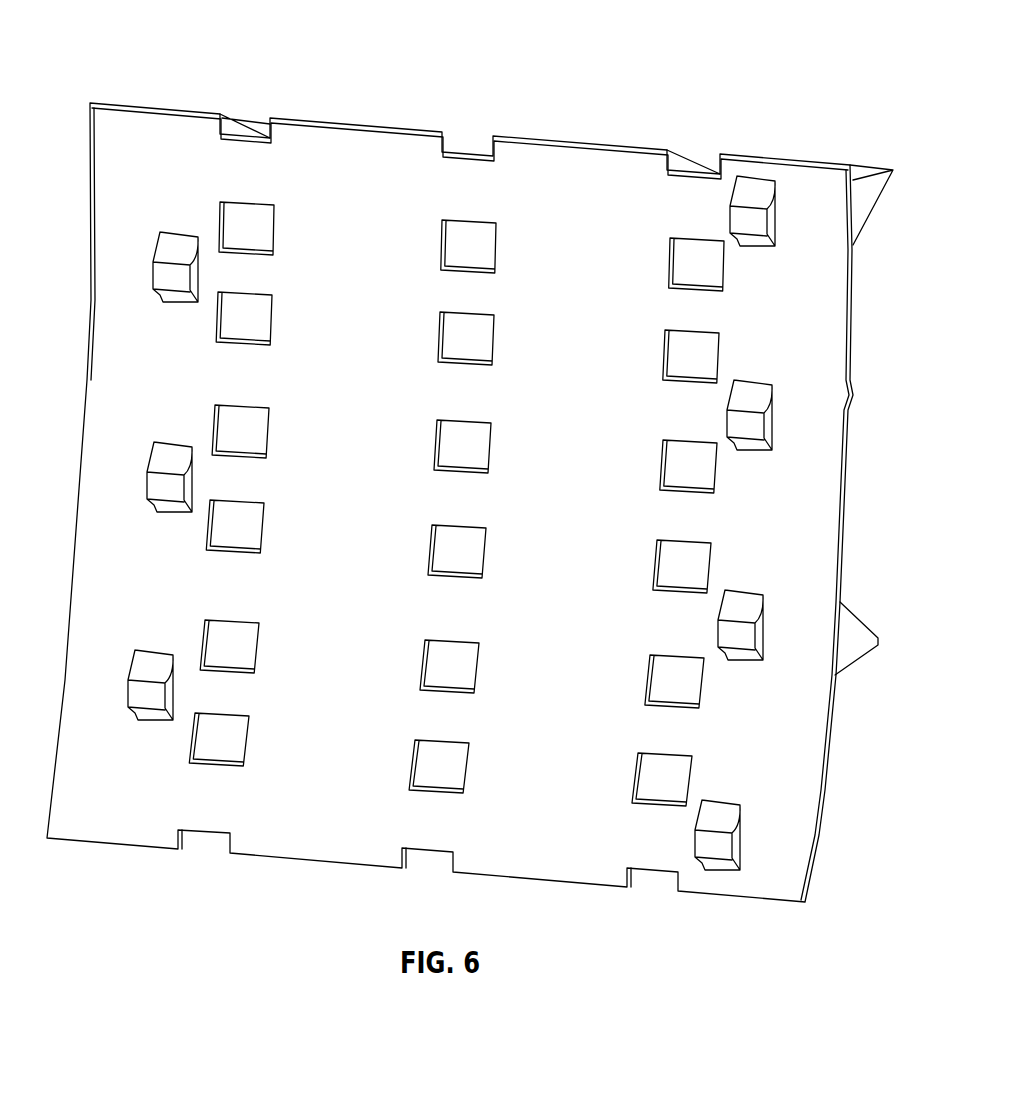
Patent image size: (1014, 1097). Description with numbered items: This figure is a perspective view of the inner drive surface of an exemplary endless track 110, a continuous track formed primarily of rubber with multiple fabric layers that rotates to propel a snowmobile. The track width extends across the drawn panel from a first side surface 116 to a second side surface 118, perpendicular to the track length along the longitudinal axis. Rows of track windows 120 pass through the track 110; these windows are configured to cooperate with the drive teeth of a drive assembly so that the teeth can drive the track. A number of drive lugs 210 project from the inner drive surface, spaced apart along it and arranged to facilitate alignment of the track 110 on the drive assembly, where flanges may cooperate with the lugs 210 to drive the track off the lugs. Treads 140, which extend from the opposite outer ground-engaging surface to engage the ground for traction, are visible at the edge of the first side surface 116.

The endless track 110 is at (152, 45).
The first side surface 116 is at (856, 350).
The second side surface 118 is at (76, 394).
The track windows 120 is at (254, 205).
The treads 140 is at (890, 168).
The drive lugs 210 is at (165, 272).